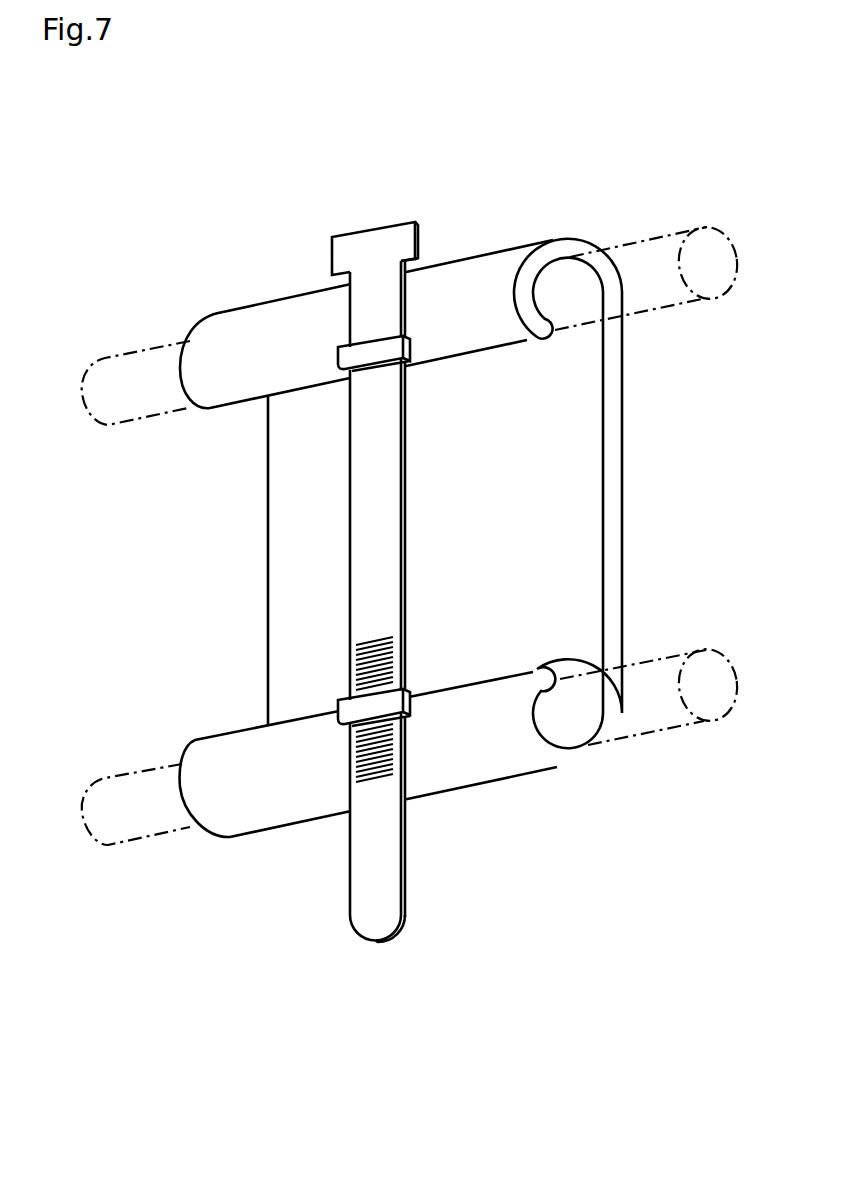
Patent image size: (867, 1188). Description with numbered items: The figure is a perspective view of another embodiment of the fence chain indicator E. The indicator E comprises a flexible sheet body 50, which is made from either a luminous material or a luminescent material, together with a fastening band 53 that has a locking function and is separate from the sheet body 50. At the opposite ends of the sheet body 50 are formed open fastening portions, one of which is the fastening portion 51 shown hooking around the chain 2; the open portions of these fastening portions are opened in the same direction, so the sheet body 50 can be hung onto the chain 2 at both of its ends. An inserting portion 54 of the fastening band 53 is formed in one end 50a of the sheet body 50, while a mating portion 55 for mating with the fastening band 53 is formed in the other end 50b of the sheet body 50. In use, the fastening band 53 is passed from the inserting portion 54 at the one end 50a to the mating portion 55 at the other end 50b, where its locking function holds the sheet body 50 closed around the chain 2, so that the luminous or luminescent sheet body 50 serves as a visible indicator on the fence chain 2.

The fence chain indicator E is at (375, 186).
The tube 2 is at (642, 240).
The flexible sheet body 50 is at (617, 473).
The one end of the sheet body 50a is at (427, 367).
The other end of the sheet body 50b is at (432, 684).
The open fastening portion 51 is at (490, 265).
The fastening band 53 is at (358, 925).
The inserting portion 54 is at (338, 360).
The mating portion 55 is at (338, 718).